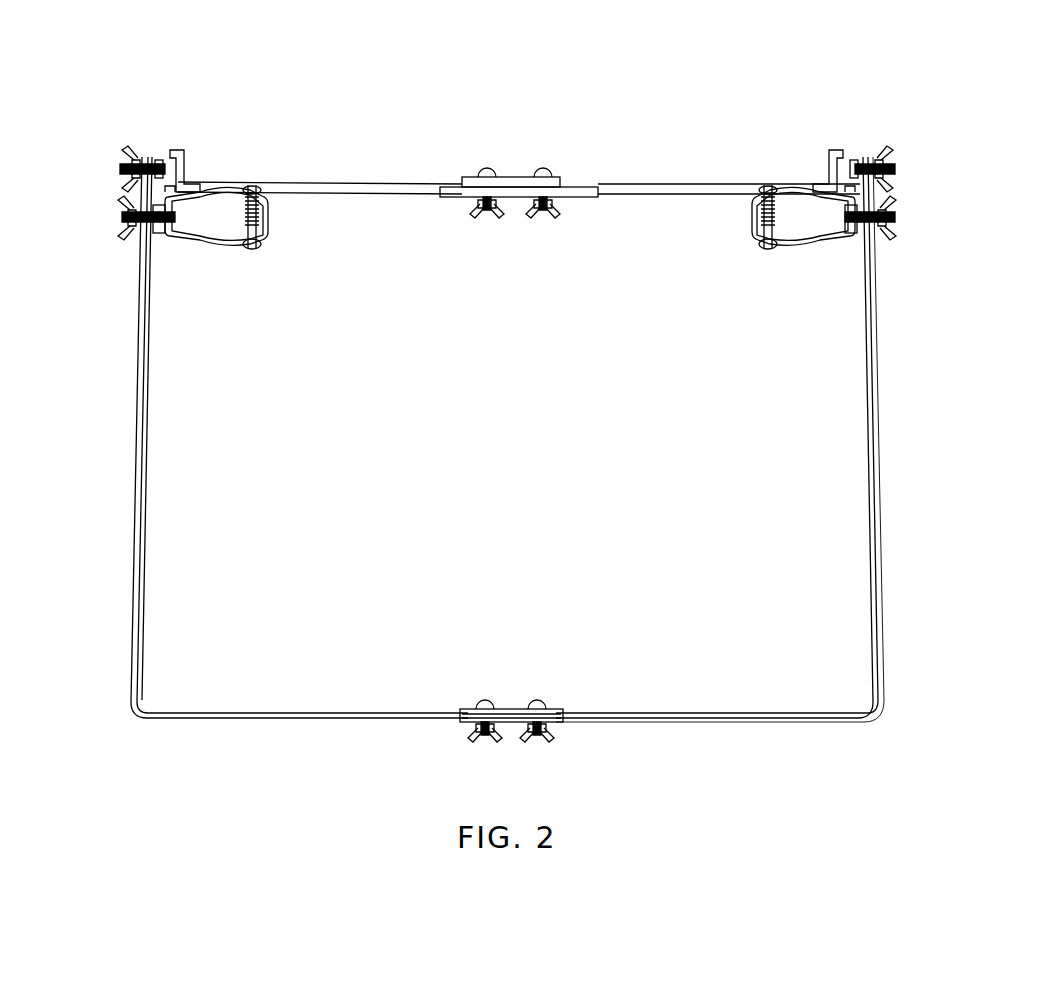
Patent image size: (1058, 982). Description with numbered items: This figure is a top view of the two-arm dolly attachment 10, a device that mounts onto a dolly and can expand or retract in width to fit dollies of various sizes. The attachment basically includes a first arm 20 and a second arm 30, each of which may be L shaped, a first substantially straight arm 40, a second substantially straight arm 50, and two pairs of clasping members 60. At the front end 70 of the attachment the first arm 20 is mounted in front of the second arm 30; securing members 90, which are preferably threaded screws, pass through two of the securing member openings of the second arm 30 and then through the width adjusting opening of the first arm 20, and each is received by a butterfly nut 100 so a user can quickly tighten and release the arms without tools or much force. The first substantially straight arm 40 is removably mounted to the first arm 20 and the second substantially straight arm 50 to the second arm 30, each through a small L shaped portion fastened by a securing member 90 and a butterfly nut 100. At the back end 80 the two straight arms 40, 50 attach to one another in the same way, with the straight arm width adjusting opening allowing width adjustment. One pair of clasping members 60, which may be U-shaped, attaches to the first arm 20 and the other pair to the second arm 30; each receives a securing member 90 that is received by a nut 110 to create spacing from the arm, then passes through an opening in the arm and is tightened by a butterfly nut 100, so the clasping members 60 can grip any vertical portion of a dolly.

The two-arm dolly attachment 10 is at (166, 62).
The first arm 20 is at (138, 455).
The second arm 30 is at (872, 455).
The first substantially straight arm 40 is at (333, 182).
The second substantially straight arm 50 is at (668, 183).
The clasping members 60 is at (207, 192).
The front end 70 is at (508, 728).
The back end 80 is at (522, 187).
The securing members 90 is at (160, 168).
The butterfly nut 100 is at (122, 160).
The nut 110 is at (170, 236).